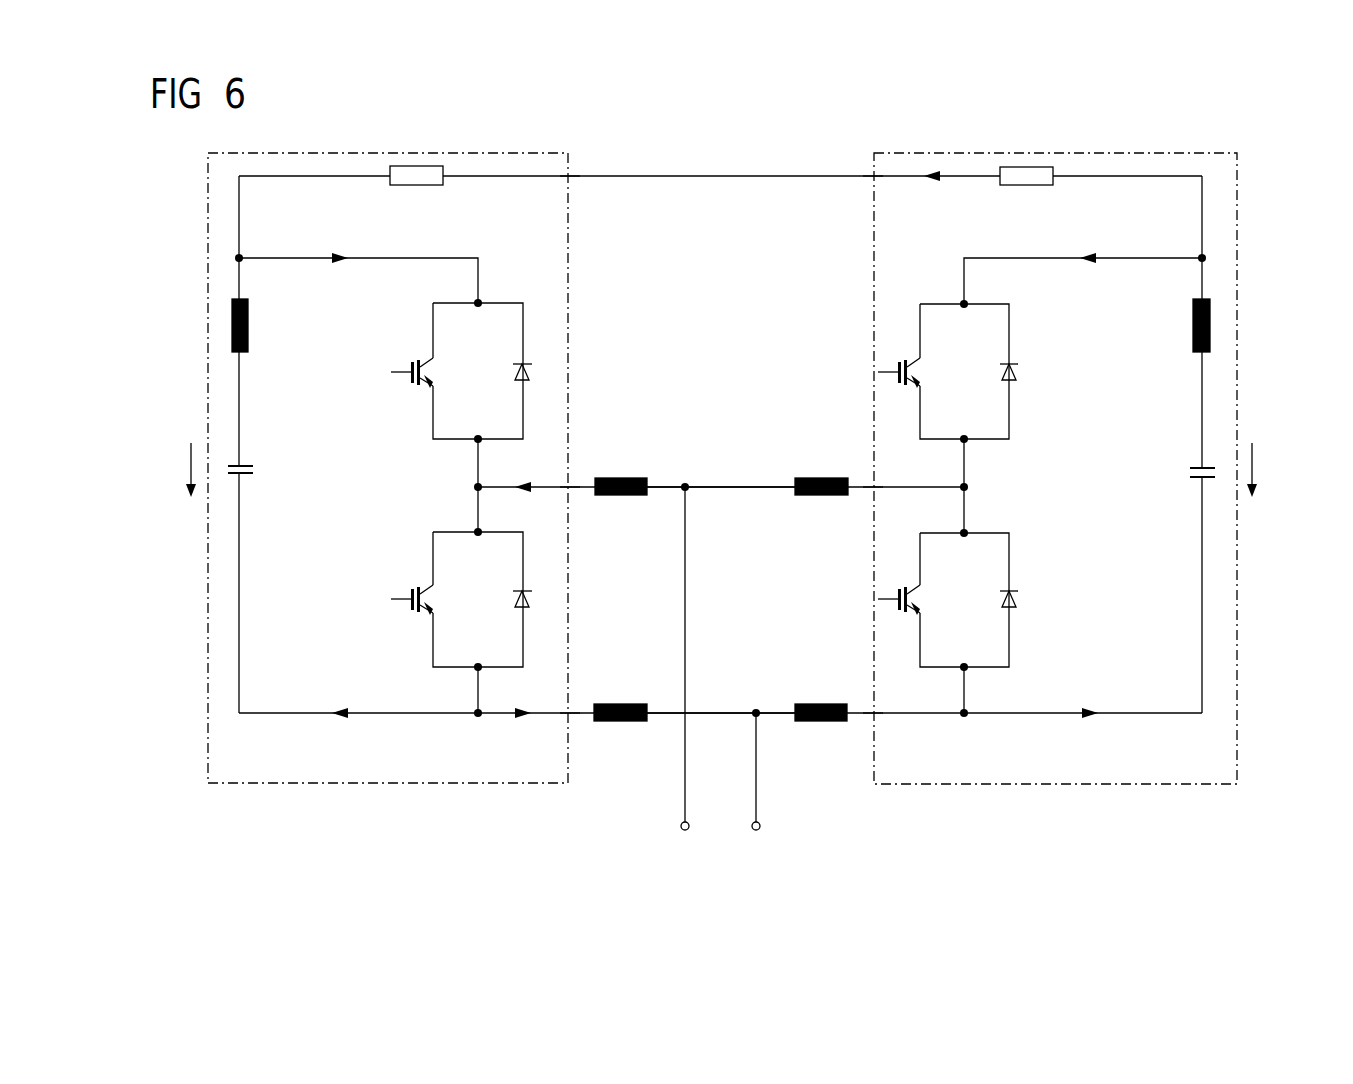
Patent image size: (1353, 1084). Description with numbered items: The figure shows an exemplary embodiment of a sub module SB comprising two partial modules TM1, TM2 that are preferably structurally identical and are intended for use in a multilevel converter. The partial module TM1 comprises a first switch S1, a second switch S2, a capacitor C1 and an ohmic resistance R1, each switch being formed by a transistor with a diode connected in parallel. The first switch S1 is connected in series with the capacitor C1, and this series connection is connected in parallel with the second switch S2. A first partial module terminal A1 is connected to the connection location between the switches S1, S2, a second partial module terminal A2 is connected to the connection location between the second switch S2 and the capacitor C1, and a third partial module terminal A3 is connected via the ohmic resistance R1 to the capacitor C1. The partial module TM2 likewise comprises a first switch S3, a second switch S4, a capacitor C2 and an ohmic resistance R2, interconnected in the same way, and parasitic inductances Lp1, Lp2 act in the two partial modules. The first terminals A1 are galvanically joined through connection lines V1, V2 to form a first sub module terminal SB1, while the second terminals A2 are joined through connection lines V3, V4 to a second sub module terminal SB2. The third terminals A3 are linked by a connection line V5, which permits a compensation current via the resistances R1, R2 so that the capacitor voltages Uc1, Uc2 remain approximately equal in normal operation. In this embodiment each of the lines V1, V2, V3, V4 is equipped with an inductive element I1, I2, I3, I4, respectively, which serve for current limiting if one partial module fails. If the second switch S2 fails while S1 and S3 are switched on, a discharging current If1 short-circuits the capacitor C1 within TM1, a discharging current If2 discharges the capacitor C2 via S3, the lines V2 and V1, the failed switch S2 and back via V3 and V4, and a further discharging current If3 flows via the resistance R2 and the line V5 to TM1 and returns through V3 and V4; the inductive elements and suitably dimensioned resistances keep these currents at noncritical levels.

The first partial module terminal A1 is at (570, 487).
The second partial module terminal A2 is at (570, 713).
The third partial module terminal A3 is at (570, 176).
The galvanic connection line V1 is at (660, 487).
The galvanic connection line V2 is at (773, 487).
The connection line V3 is at (660, 713).
The connection line V4 is at (773, 713).
The connection line V5 is at (723, 176).
The partial module TM1 is at (570, 297).
The partial module TM2 is at (873, 297).
The first switch S1 is at (422, 343).
The second switch S2 is at (422, 570).
The first switch S3 is at (912, 343).
The second switch S4 is at (912, 570).
The ohmic resistance R1 is at (416, 193).
The ohmic resistance R2 is at (1026, 193).
The parasitic inductance Lp1 is at (261, 325).
The parasitic inductance Lp2 is at (1180, 325).
The capacitor C1 is at (249, 488).
The capacitor C2 is at (1191, 490).
The capacitor voltage Uc1 is at (171, 470).
The capacitor voltage Uc2 is at (1272, 470).
The inductive element I1 is at (621, 503).
The inductive element I2 is at (821, 503).
The inductive element I3 is at (620, 731).
The inductive element I4 is at (821, 731).
The discharging current If1 is at (340, 489).
The discharging current If2 is at (805, 490).
The discharging current If3 is at (934, 194).
The sub module SB is at (1062, 830).
The first sub module terminal SB1 is at (685, 830).
The second sub module terminal SB2 is at (756, 830).